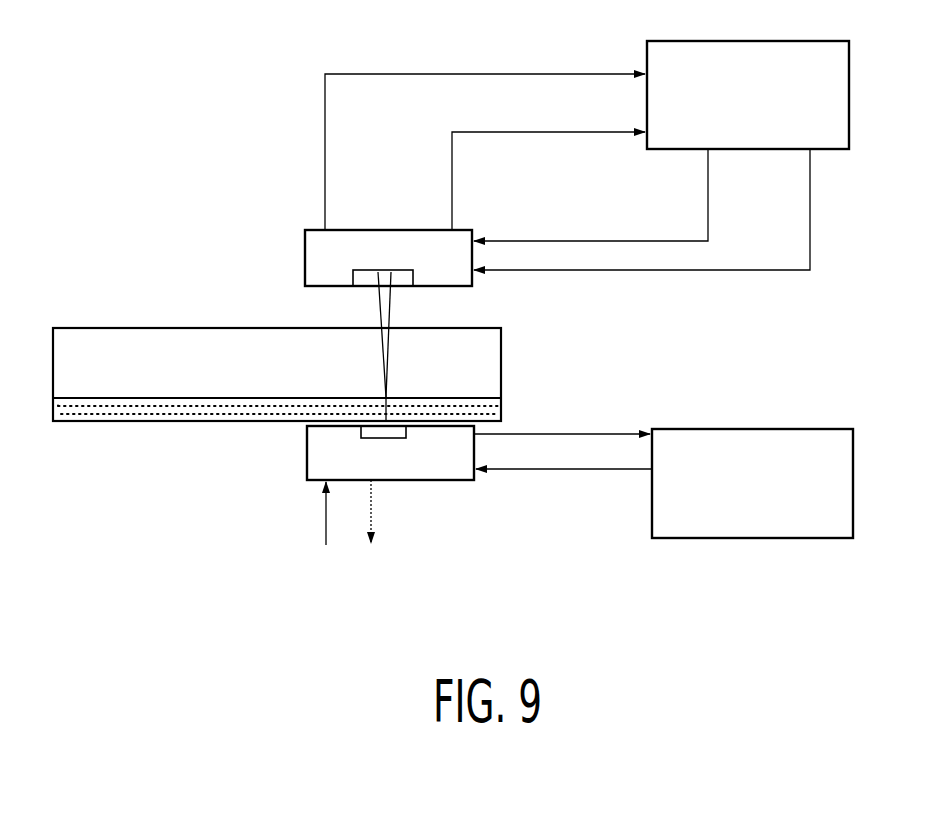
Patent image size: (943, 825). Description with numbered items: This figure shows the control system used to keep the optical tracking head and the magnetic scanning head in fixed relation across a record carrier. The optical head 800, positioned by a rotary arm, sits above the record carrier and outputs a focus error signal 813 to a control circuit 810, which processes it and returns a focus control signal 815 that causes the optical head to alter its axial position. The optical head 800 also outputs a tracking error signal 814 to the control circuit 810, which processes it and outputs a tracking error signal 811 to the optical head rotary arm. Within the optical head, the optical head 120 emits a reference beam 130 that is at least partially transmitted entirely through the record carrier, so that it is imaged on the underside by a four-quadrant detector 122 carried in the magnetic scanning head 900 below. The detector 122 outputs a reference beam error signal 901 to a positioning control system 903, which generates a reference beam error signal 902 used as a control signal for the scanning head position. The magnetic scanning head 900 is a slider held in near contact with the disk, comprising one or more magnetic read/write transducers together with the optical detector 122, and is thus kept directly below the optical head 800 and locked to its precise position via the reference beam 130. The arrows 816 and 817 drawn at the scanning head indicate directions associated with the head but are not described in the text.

The control circuit 810 is at (856, 114).
The optical head 800 is at (298, 248).
The optical head 120 is at (387, 268).
The reference beam 130 is at (394, 308).
The magnetic scanning head 900 is at (418, 510).
The 4-quadrant detector 122 is at (354, 436).
The positioning control system 903 is at (862, 500).
The reference beam error signal 901 is at (534, 427).
The reference beam error signal 902 is at (514, 479).
The tracking error signal 814 is at (447, 65).
The focus error signal 813 is at (488, 147).
The focus control signal 815 is at (720, 173).
The tracking error signal 811 is at (606, 278).
The input direction 816 is at (322, 542).
The output direction 817 is at (380, 517).